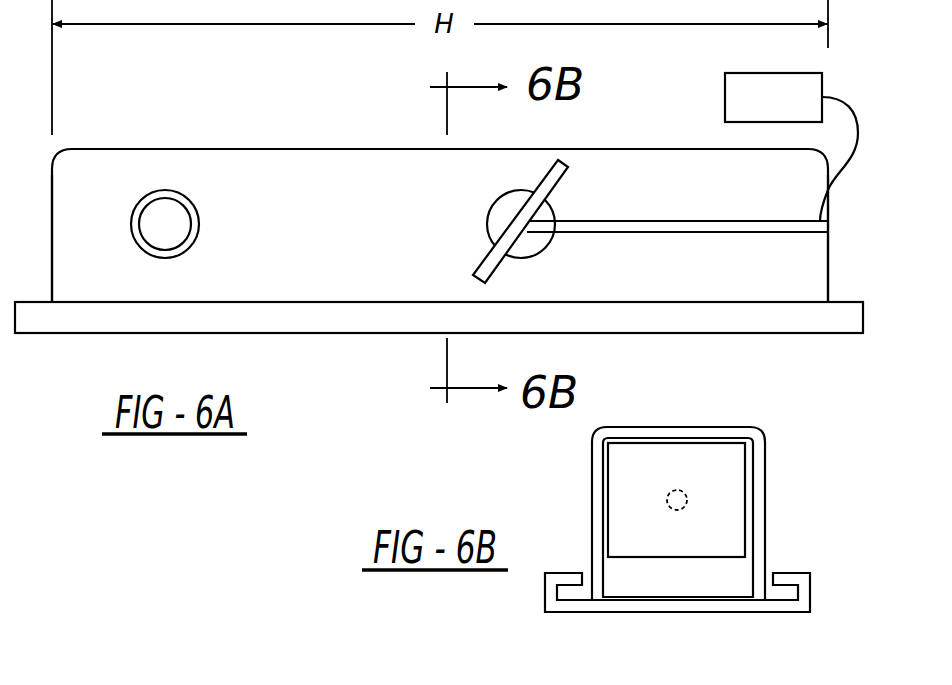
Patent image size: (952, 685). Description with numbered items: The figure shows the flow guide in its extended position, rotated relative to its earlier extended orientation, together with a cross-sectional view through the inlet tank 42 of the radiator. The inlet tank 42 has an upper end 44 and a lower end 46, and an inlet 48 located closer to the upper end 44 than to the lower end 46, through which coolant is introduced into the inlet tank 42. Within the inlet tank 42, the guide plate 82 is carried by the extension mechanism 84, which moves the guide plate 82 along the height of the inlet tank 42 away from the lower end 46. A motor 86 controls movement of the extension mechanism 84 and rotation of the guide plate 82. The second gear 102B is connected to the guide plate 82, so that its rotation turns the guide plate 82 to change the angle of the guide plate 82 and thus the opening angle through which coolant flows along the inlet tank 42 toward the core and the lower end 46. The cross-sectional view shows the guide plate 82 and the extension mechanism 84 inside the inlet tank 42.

In FIG. 6A, the inlet tank 42 is at (255, 172).
In FIG. 6B, the inlet tank 42 is at (765, 485).
In FIG. 6A, the upper end 44 is at (52, 267).
In FIG. 6A, the lower end 46 is at (828, 282).
In FIG. 6A, the inlet 48 is at (138, 219).
In FIG. 6A, the guide plate 82 is at (482, 261).
In FIG. 6B, the guide plate 82 is at (632, 488).
In FIG. 6A, the extension mechanism 84 is at (692, 233).
In FIG. 6B, the extension mechanism 84 is at (687, 499).
In FIG. 6A, the motor 86 is at (725, 97).
In FIG. 6A, the second gear 102B is at (507, 197).